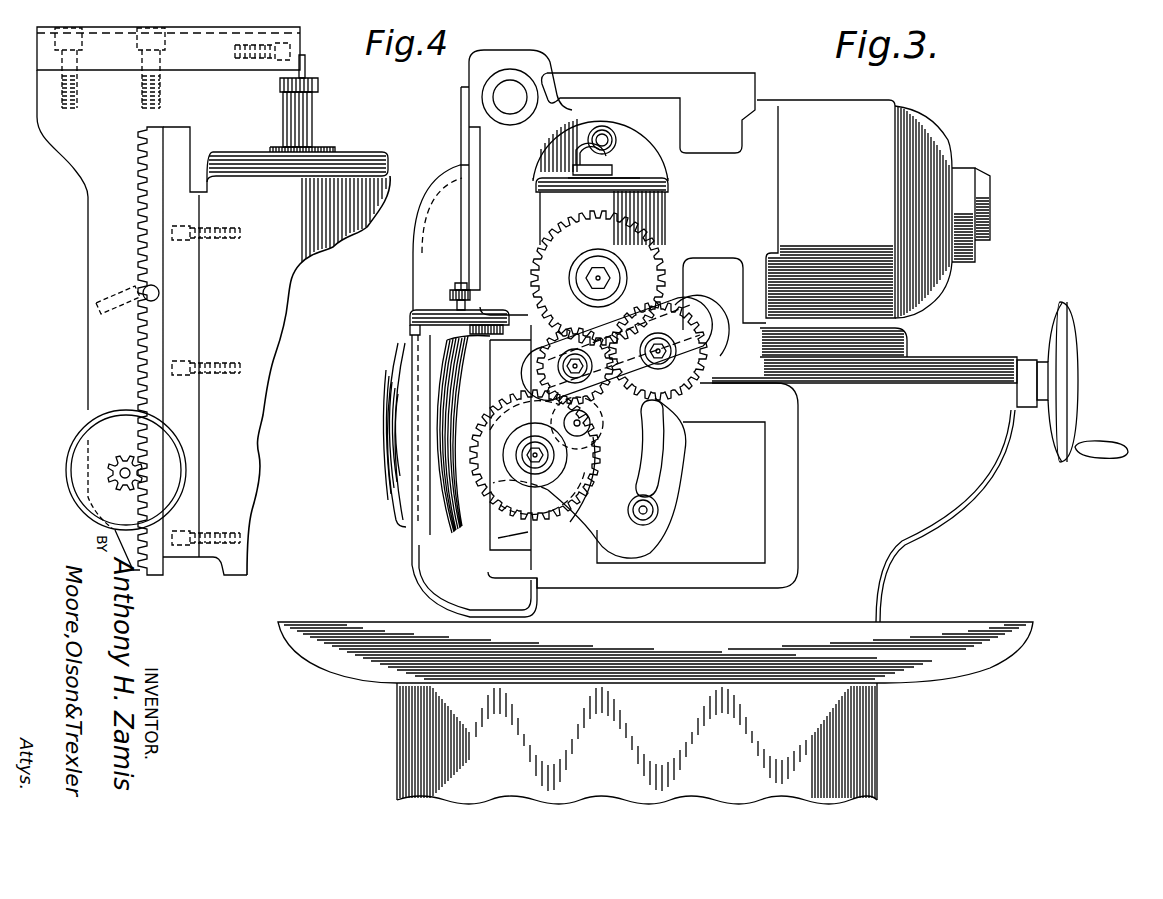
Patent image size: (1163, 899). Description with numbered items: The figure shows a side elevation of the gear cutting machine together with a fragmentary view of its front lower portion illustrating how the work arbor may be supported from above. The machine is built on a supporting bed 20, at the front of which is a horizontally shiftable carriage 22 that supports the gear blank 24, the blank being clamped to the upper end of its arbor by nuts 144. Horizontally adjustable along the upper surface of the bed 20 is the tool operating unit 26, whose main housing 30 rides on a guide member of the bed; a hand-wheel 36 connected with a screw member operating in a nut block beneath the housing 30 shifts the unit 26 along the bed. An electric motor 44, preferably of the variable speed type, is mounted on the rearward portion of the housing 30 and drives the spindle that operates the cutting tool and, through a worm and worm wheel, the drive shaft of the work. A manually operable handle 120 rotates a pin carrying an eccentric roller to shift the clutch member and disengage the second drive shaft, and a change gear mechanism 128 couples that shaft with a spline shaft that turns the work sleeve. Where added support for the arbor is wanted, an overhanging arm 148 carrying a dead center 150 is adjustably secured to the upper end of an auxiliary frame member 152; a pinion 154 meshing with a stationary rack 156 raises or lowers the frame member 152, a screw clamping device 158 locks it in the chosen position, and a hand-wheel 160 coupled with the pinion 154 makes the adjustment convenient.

In FIG. 3, the supporting bed 20 is at (933, 548).
In FIG. 4, the carriage 22 is at (305, 318).
In FIG. 3, the carriage 22 is at (384, 462).
In FIG. 4, the gear blank 24 is at (326, 84).
In FIG. 3, the gear blank 24 is at (447, 293).
In FIG. 3, the tool operating unit 26 is at (668, 72).
In FIG. 3, the main housing 30 is at (762, 112).
In FIG. 3, the hand-wheel 36 is at (1076, 309).
In FIG. 3, the electric motor 44 is at (876, 107).
In FIG. 3, the handle 120 is at (604, 140).
In FIG. 3, the change gear mechanism 128 is at (693, 432).
In FIG. 4, the nuts 144 is at (300, 133).
In FIG. 4, the overhanging arm 148 is at (217, 67).
In FIG. 4, the dead center 150 is at (303, 74).
In FIG. 4, the auxiliary frame member 152 is at (82, 148).
In FIG. 4, the pinion 154 is at (108, 482).
In FIG. 4, the stationary rack 156 is at (136, 358).
In FIG. 4, the screw clamping device 158 is at (118, 296).
In FIG. 4, the hand-wheel 160 is at (81, 447).